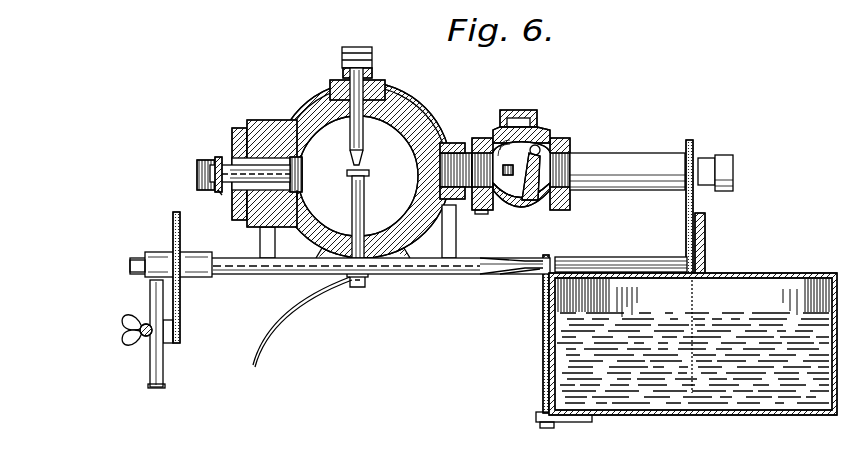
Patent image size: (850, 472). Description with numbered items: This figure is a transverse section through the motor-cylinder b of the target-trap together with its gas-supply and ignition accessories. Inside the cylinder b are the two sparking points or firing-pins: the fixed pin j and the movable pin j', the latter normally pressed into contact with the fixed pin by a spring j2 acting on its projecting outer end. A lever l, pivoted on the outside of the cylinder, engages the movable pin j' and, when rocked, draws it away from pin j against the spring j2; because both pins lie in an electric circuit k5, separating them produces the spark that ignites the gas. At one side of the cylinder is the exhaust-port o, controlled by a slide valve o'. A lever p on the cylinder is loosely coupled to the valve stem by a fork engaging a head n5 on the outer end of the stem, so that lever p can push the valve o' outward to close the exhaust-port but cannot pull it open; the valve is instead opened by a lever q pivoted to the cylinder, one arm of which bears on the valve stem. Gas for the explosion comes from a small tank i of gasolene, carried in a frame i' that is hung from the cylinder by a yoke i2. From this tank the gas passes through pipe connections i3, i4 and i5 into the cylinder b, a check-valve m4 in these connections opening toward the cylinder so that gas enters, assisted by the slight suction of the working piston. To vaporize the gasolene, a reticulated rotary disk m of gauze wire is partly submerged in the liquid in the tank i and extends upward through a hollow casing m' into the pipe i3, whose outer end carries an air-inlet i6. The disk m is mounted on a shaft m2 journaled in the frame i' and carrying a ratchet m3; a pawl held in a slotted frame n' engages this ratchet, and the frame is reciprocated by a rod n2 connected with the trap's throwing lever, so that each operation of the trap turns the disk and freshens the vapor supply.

The cylinder b is at (412, 116).
The slide valve o' is at (283, 173).
The exhaust-port o is at (313, 198).
The lever q is at (197, 174).
The lever p is at (218, 158).
The flange n5 is at (218, 194).
The spring j2 is at (342, 52).
The lever l is at (372, 75).
The movable firing-pin j' is at (372, 116).
The fixed firing-pin j is at (363, 228).
The yoke i2 is at (445, 130).
The pipe connection i4 is at (540, 150).
The check-valve m4 is at (520, 176).
The pipe connection i5 is at (478, 214).
The pipe i3 is at (645, 154).
The air-inlet i6 is at (733, 166).
The hollow casing m' is at (639, 284).
The electric circuit k5 is at (282, 323).
The ratchet m3 is at (181, 305).
The slotted frame n' is at (173, 334).
The rod n2 is at (138, 340).
The frame i' is at (511, 306).
The shaft m2 is at (590, 259).
The tank i is at (693, 330).
The reticulated rotary disk m is at (709, 336).